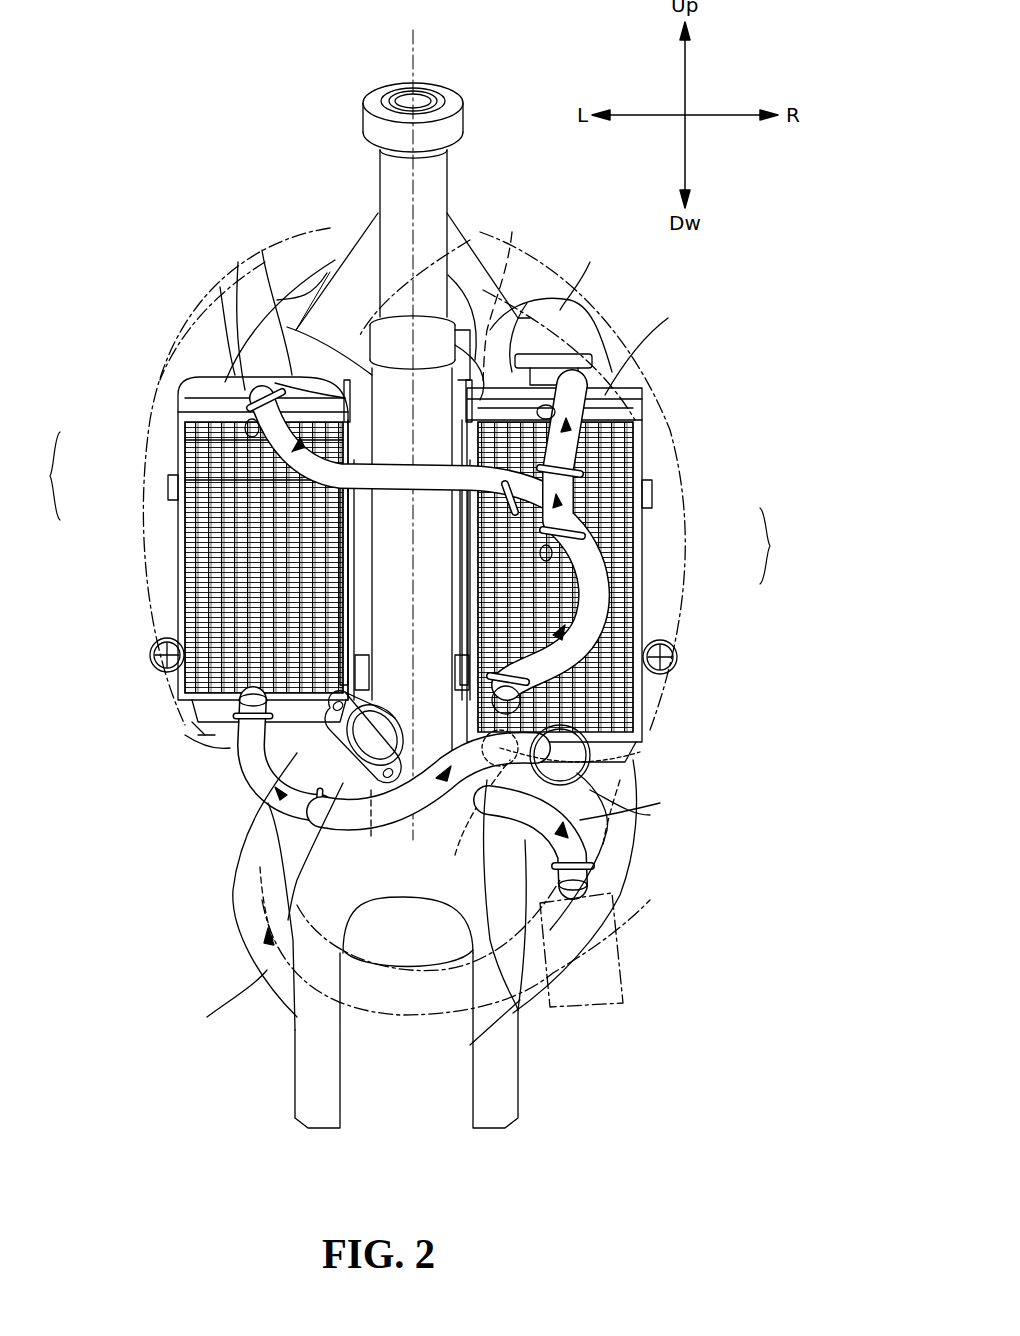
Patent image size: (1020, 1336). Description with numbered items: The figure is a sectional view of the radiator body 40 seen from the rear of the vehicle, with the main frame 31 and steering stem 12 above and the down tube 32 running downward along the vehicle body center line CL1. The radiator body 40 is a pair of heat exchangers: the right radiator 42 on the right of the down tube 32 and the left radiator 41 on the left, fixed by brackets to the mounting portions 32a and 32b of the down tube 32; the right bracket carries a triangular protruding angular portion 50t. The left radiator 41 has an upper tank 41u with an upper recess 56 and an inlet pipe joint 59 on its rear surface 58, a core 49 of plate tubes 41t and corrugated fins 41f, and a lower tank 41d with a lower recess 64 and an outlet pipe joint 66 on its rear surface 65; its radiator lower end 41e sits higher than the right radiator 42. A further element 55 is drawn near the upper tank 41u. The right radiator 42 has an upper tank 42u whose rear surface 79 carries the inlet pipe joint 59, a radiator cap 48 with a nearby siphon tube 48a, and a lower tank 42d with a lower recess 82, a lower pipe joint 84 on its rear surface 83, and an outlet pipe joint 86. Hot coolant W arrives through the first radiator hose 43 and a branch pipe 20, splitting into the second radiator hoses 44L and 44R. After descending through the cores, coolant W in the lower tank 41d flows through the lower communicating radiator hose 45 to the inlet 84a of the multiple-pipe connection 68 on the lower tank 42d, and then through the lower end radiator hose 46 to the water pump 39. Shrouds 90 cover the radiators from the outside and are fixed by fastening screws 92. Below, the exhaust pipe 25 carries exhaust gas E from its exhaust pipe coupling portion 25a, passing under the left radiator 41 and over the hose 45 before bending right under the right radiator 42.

The steering stem 12 is at (438, 176).
The main frame 31 is at (350, 293).
The radiator cap 48 is at (590, 335).
The siphon tube 48a is at (515, 290).
The shroud 90 is at (135, 348).
The radiator body 40 is at (200, 373).
The left radiator 41 is at (178, 575).
The upper tank 41u is at (190, 398).
The plate tubes 41t is at (190, 452).
The fins 41f is at (200, 483).
The lower tank 41d is at (215, 740).
The radiator lower end 41e is at (200, 760).
The core 49 is at (412, 508).
The rear surface 65 is at (190, 735).
The fastening screw 92 is at (152, 664).
The down tube 32 is at (175, 655).
The mounting portion 32a is at (372, 458).
The mounting portion 32b is at (462, 650).
The exhaust pipe coupling portion 25a is at (398, 715).
The protruding angular portion 50t is at (462, 365).
The right radiator 42 is at (650, 462).
The upper tank 42u is at (635, 390).
The lower tank 42d is at (590, 760).
The rear surface 79 is at (555, 350).
The second radiator hose 44R is at (640, 405).
The second radiator hose 44L is at (428, 490).
The branch pipe 20 is at (640, 488).
The inlet pipe joint 59 is at (222, 287).
The rear surface 58 is at (228, 378).
The upper recess 56 is at (234, 313).
The stay 55 is at (270, 298).
The first radiator hose 43 is at (618, 607).
The outlet pipe joint 66 is at (228, 744).
The lower recess 64 is at (300, 822).
The lower communicating radiator hose 45 is at (250, 814).
The vehicle body center line CL1 is at (367, 830).
The coolant W is at (420, 485).
The lower pipe joint 84 is at (610, 748).
The lower recess 82 is at (650, 758).
The inlet 84a is at (474, 816).
The multiple-pipe connection 68 is at (540, 797).
The lower end radiator hose 46 is at (615, 840).
The outlet pipe joint 86 is at (615, 797).
The water pump 39 is at (620, 914).
The exhaust pipe 25 is at (268, 994).
The exhaust gas E is at (245, 897).
The rear surface 83 is at (470, 1000).